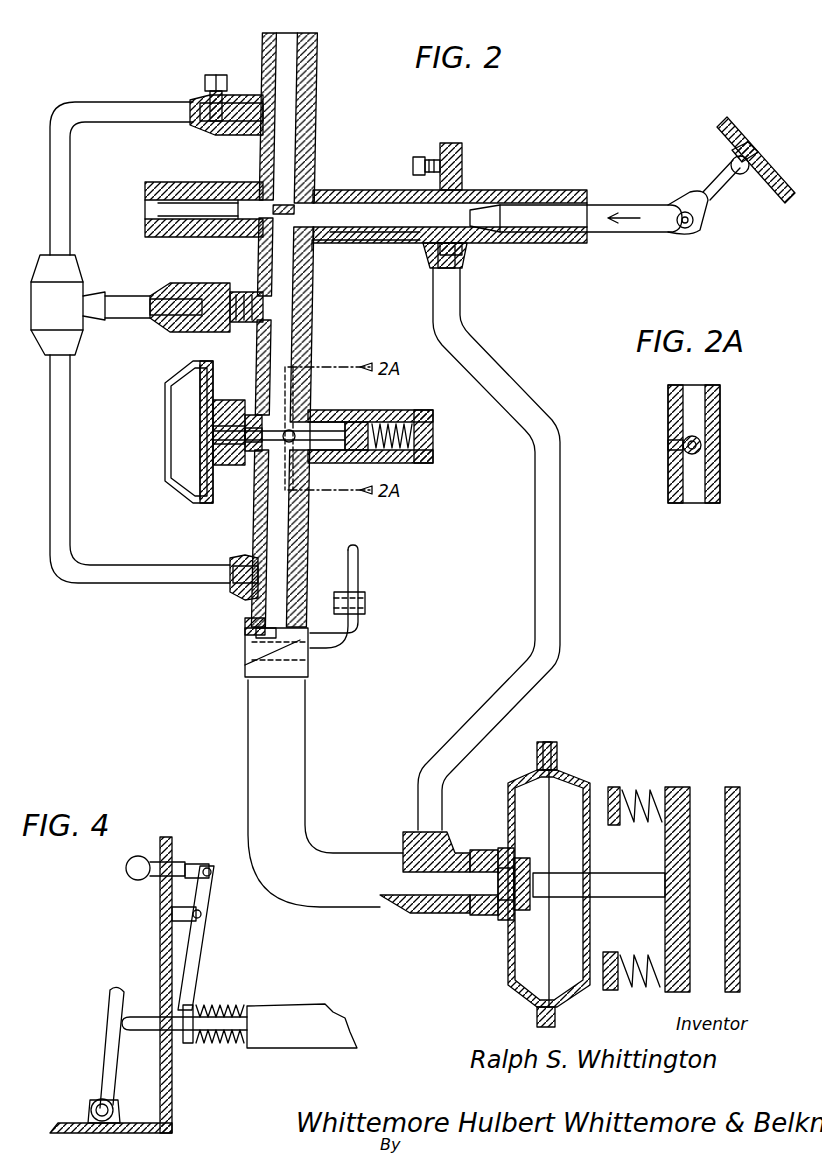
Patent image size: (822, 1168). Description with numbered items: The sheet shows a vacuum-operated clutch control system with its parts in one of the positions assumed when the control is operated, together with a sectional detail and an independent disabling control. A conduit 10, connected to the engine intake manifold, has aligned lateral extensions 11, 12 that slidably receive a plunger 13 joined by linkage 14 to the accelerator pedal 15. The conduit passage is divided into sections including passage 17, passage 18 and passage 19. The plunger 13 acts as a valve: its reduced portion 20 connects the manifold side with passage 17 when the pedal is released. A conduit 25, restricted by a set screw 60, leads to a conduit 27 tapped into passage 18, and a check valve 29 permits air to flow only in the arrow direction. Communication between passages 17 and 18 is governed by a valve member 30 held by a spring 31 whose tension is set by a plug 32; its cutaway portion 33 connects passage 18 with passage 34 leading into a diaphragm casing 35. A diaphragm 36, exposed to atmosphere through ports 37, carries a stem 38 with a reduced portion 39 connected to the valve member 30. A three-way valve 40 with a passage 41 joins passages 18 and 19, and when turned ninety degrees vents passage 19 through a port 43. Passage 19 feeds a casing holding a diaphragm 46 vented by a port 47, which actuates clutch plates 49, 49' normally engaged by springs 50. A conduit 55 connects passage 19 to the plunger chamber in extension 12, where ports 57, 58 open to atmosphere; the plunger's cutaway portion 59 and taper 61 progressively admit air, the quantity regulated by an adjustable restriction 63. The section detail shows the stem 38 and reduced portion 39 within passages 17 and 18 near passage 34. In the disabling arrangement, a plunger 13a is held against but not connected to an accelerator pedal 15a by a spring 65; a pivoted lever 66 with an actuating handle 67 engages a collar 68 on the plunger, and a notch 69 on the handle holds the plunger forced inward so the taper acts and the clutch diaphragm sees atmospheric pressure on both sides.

In FIG. 2, the conduit 10 is at (304, 77).
In FIG. 2, the lateral extension 11 is at (162, 182).
In FIG. 2, the lateral extension 12 is at (400, 190).
In FIG. 2, the plunger 13 is at (610, 207).
In FIG. 4, the plunger 13a is at (265, 1015).
In FIG. 2, the linkage 14 is at (698, 228).
In FIG. 2, the accelerator pedal 15 is at (728, 135).
In FIG. 4, the accelerator pedal 15a is at (110, 1020).
In FIG. 2, the passage 17 is at (310, 268).
In FIG. 2A, the passage 17 is at (695, 411).
In FIG. 2, the passage 18 is at (298, 525).
In FIG. 2A, the passage 18 is at (705, 482).
In FIG. 2, the passage 19 is at (415, 905).
In FIG. 2, the reduced portion 20 is at (306, 205).
In FIG. 2, the conduit 25 is at (72, 180).
In FIG. 2, the conduit 27 is at (70, 450).
In FIG. 2, the check valve 29 is at (233, 288).
In FIG. 2, the valve member 30 is at (316, 430).
In FIG. 2, the spring 31 is at (360, 422).
In FIG. 2, the plug 32 is at (432, 432).
In FIG. 2, the cutaway portion 33 is at (320, 460).
In FIG. 2, the passage 34 is at (247, 466).
In FIG. 2A, the passage 34 is at (670, 470).
In FIG. 2, the diaphragm casing 35 is at (172, 490).
In FIG. 2, the diaphragm 36 is at (196, 363).
In FIG. 2, the ports 37 is at (165, 440).
In FIG. 2, the stem 38 is at (289, 436).
In FIG. 2A, the stem 38 is at (660, 440).
In FIG. 2, the reduced portion 39 is at (254, 396).
In FIG. 2A, the reduced portion 39 is at (700, 442).
In FIG. 2, the three-way valve 40 is at (328, 655).
In FIG. 2, the passage 41 is at (243, 622).
In FIG. 2, the port 43 is at (245, 672).
In FIG. 2, the diaphragm 46 is at (560, 768).
In FIG. 2, the port 47 is at (590, 872).
In FIG. 2, the clutch plate 49 is at (680, 862).
In FIG. 2, the clutch plate 49' is at (736, 862).
In FIG. 2, the springs 50 is at (640, 790).
In FIG. 2, the conduit 55 is at (542, 410).
In FIG. 2, the port 57 is at (458, 178).
In FIG. 2, the port 58 is at (326, 245).
In FIG. 2, the cutaway portion 59 is at (405, 248).
In FIG. 2, the set screw 60 is at (228, 95).
In FIG. 2, the taper 61 is at (500, 250).
In FIG. 2, the adjustable restriction 63 is at (430, 155).
In FIG. 4, the spring 65 is at (210, 1005).
In FIG. 4, the lever 66 is at (202, 940).
In FIG. 4, the actuating handle 67 is at (130, 870).
In FIG. 4, the collar 68 is at (188, 1045).
In FIG. 4, the notch 69 is at (194, 864).